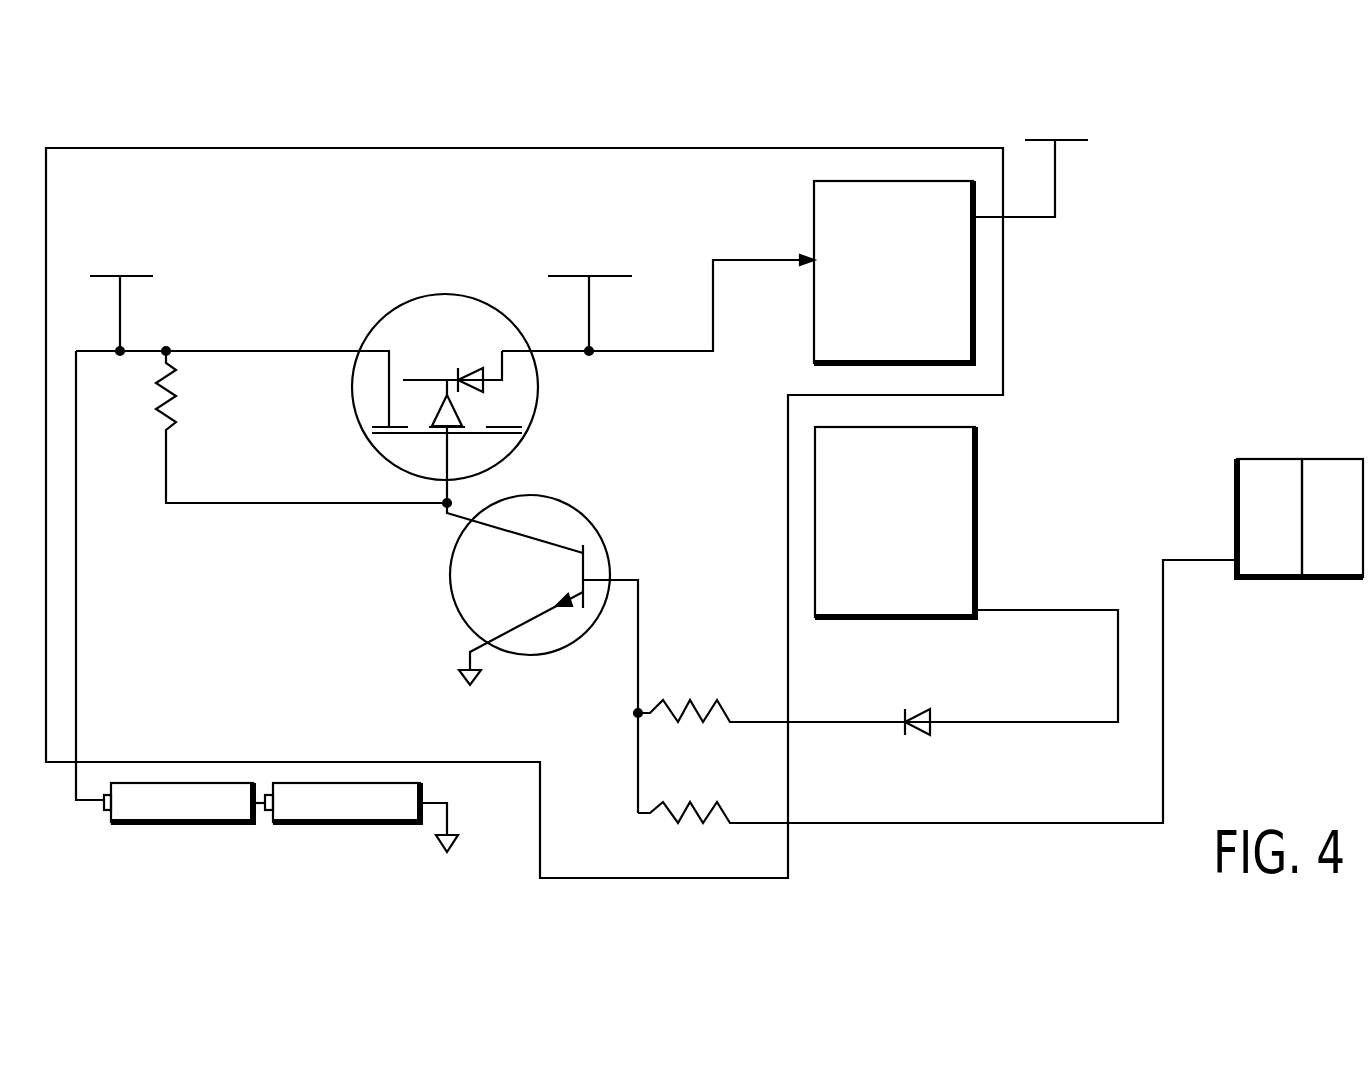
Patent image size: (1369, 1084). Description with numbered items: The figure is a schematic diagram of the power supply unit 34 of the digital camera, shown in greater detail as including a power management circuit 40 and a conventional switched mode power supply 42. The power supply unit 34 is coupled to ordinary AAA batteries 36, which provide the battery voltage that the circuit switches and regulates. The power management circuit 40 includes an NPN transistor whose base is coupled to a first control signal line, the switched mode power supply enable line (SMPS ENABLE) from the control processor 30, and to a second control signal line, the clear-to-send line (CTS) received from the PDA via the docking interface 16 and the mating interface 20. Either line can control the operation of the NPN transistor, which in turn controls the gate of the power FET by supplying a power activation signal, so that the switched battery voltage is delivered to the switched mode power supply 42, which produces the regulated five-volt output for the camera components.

The docking interface 16 is at (1338, 459).
The mating interface 20 is at (1258, 459).
The control processor 30 is at (975, 490).
The power supply unit 34 is at (1008, 377).
The AAA batteries 36 is at (173, 822).
The power management circuit 40 is at (578, 450).
The switched mode power supply 42 is at (912, 181).